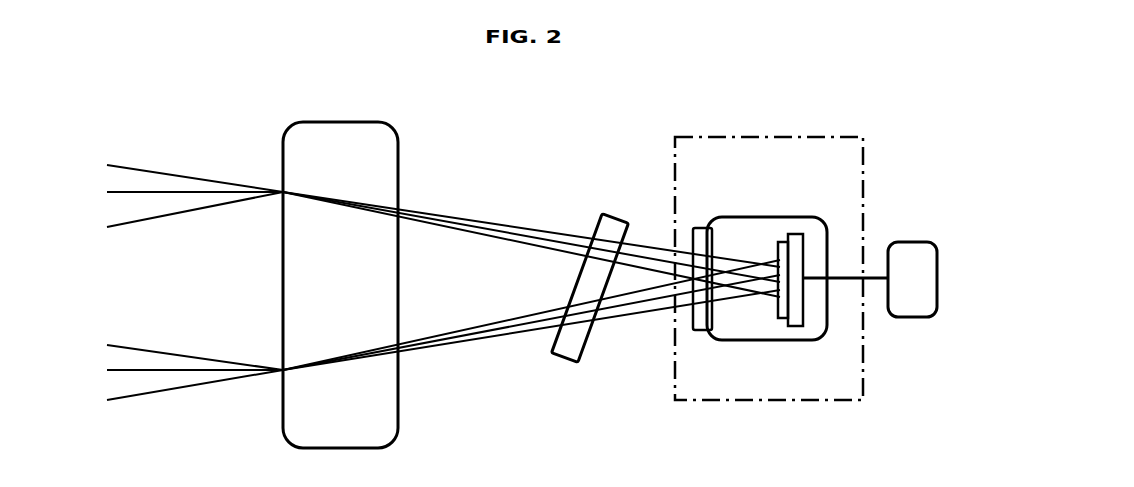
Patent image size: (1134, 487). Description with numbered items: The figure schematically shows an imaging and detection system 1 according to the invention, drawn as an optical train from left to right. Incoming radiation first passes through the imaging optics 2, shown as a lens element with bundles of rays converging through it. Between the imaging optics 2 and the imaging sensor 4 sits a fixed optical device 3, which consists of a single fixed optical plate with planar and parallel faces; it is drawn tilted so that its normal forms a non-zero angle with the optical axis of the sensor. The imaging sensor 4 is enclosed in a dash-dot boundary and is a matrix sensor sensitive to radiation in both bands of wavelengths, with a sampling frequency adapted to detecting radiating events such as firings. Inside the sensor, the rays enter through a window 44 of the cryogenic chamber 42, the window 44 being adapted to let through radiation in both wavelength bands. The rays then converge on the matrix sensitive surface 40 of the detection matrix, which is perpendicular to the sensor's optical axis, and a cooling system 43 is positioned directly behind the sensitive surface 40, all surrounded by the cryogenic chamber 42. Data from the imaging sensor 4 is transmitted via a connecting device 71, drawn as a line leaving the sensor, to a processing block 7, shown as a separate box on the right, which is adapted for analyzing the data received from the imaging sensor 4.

The imaging and detection system 1 is at (618, 106).
The imaging optics 2 is at (341, 121).
The fixed optical device 3 is at (586, 284).
The imaging sensor 4 is at (762, 152).
The processing block 7 is at (910, 258).
The matrix sensitive surface 40 is at (781, 256).
The cryogenic chamber 42 is at (764, 230).
The cooling system 43 is at (803, 248).
The window 44 is at (693, 243).
The connecting device 71 is at (850, 286).